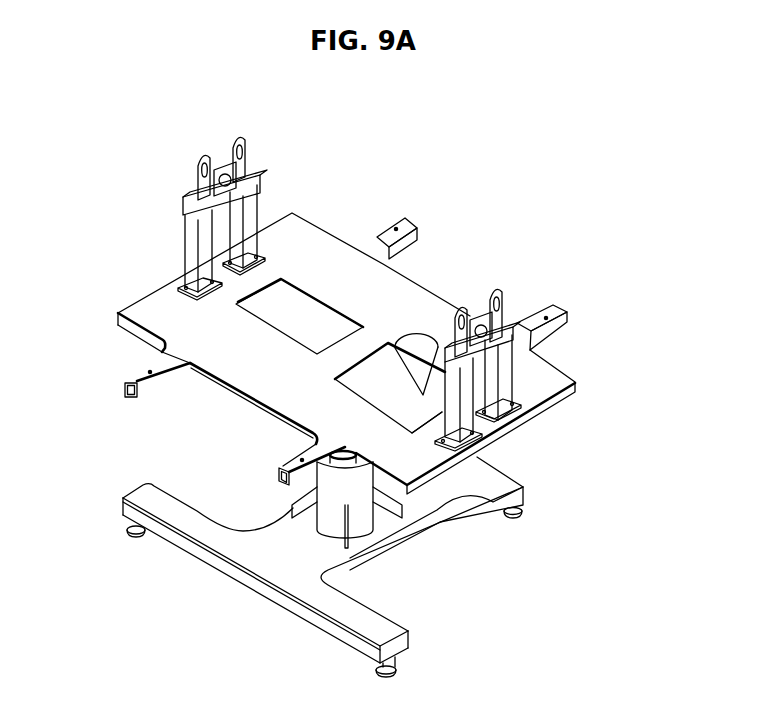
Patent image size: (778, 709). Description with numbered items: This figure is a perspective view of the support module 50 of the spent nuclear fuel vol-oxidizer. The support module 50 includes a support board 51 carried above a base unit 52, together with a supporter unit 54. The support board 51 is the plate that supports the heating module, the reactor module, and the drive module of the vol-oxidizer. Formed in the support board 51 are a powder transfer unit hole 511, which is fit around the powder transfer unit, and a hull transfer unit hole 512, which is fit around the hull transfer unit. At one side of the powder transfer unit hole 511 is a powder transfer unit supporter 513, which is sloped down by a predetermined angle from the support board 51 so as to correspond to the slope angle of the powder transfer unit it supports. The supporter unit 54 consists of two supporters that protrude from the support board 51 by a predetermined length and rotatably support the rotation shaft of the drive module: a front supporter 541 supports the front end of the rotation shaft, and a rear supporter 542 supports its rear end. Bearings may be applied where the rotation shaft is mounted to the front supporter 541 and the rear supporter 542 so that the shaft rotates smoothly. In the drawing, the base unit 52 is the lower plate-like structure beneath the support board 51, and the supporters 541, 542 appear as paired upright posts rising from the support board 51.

The support module 50 is at (426, 281).
The support board 51 is at (320, 243).
The powder transfer unit hole 511 is at (421, 407).
The hull transfer unit hole 512 is at (290, 317).
The powder transfer unit supporter 513 is at (368, 388).
The base unit 52 is at (282, 565).
The supporter unit 54 is at (386, 102).
The front supporter 541 is at (252, 215).
The rear supporter 542 is at (507, 380).